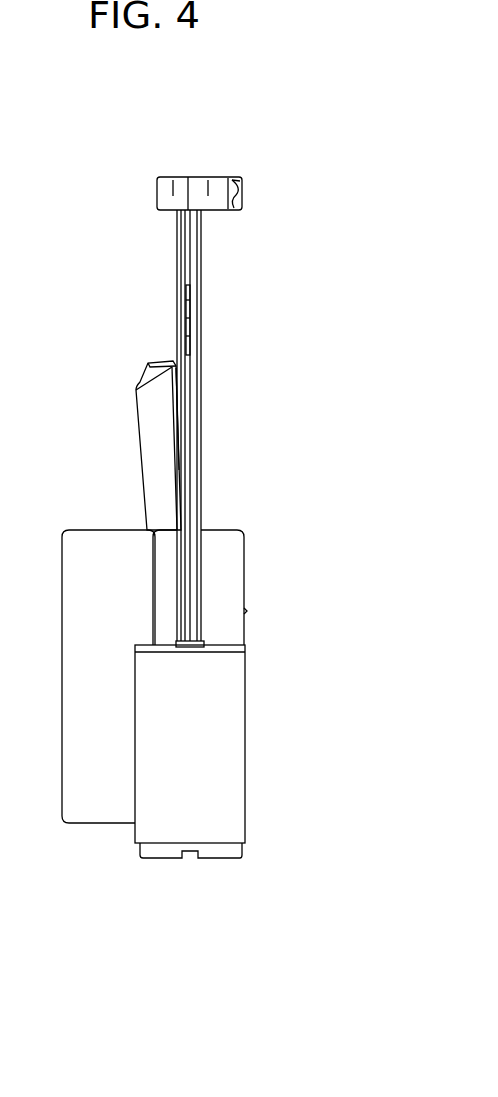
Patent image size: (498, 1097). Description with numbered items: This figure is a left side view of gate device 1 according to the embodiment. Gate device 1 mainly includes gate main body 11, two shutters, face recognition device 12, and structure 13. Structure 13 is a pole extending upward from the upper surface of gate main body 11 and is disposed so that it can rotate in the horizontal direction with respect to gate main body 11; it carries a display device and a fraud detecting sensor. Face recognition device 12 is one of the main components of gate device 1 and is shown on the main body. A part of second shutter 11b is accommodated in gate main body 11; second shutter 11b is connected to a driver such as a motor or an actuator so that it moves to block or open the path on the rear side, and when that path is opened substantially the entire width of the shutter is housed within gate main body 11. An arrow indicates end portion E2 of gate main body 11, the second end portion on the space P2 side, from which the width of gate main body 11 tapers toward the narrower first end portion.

The gate device 1 is at (360, 159).
The gate main body 11 is at (230, 760).
The second shutter 11b is at (90, 530).
The face recognition device 12 is at (237, 372).
The structure 13 is at (203, 255).
The end portion E2 is at (184, 783).